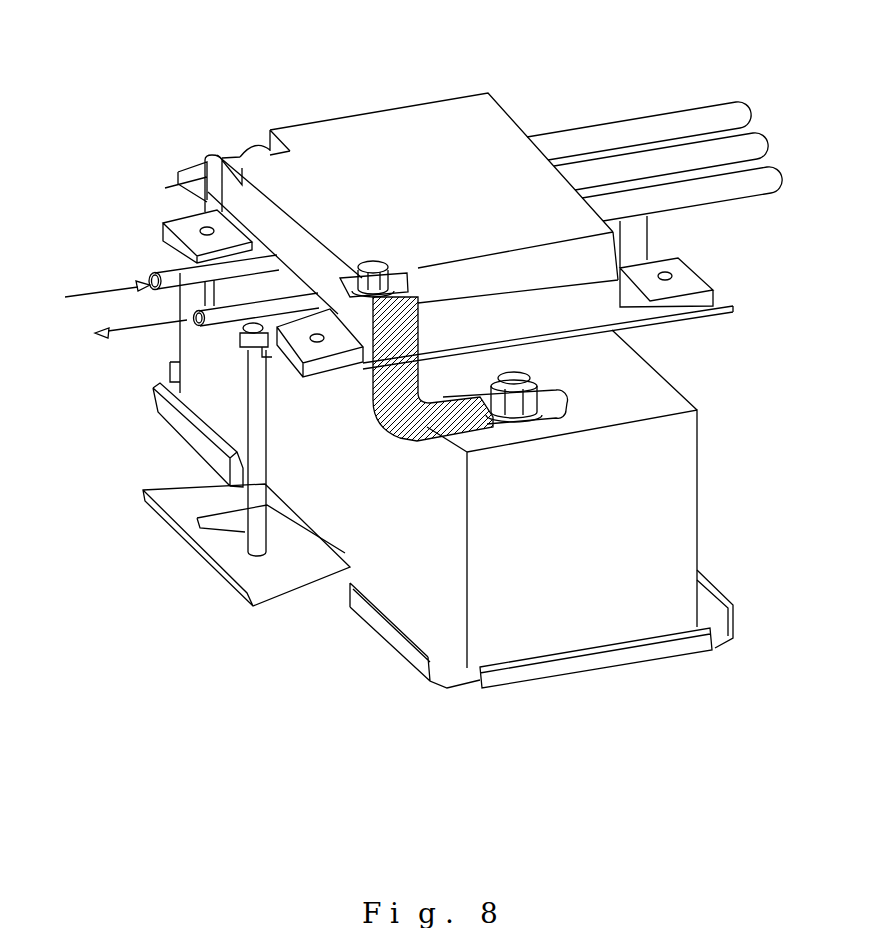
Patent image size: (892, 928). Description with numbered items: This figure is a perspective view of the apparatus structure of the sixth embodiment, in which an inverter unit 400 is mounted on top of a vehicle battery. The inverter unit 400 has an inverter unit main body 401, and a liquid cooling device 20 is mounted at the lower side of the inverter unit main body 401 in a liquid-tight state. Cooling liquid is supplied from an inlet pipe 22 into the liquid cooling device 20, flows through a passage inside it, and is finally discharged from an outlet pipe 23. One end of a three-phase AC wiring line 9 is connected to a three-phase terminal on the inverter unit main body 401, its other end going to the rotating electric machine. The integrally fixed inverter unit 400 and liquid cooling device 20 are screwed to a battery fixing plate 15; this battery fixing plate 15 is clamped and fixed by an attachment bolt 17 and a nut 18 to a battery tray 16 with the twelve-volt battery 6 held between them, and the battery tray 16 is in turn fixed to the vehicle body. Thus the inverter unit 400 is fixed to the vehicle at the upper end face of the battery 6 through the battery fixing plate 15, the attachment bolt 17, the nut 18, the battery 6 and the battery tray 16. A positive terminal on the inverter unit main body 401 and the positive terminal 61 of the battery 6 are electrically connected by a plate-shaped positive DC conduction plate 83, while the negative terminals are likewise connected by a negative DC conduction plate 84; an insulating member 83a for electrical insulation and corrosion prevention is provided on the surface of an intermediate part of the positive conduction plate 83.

The inverter unit 400 is at (418, 90).
The inverter unit main body 401 is at (322, 140).
The negative DC conduction plate 84 is at (209, 158).
The three-phase AC wiring line 9 is at (797, 180).
The liquid cooling device 20 is at (233, 217).
The inlet pipe 22 is at (155, 272).
The outlet pipe 23 is at (187, 318).
The nut 18 is at (250, 327).
The battery fixing plate 15 is at (255, 335).
The attachment bolt 17 is at (255, 410).
The insulating member 83a is at (392, 418).
The positive DC conduction plate 83 is at (552, 403).
The positive terminal 61 is at (513, 373).
The 12V battery 6 is at (683, 473).
The battery tray 16 is at (670, 653).